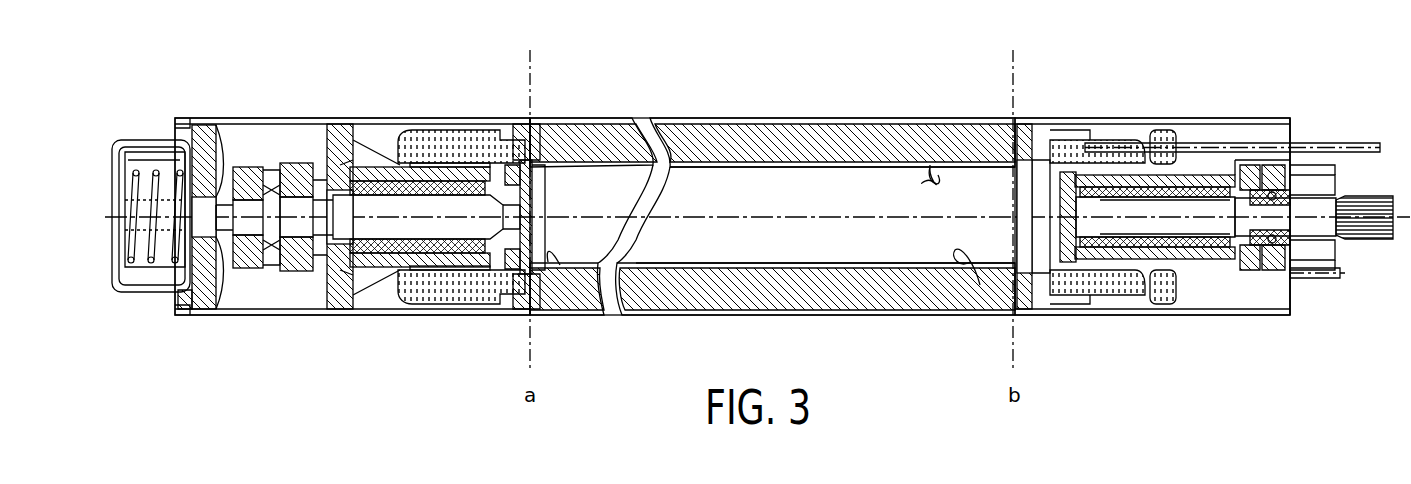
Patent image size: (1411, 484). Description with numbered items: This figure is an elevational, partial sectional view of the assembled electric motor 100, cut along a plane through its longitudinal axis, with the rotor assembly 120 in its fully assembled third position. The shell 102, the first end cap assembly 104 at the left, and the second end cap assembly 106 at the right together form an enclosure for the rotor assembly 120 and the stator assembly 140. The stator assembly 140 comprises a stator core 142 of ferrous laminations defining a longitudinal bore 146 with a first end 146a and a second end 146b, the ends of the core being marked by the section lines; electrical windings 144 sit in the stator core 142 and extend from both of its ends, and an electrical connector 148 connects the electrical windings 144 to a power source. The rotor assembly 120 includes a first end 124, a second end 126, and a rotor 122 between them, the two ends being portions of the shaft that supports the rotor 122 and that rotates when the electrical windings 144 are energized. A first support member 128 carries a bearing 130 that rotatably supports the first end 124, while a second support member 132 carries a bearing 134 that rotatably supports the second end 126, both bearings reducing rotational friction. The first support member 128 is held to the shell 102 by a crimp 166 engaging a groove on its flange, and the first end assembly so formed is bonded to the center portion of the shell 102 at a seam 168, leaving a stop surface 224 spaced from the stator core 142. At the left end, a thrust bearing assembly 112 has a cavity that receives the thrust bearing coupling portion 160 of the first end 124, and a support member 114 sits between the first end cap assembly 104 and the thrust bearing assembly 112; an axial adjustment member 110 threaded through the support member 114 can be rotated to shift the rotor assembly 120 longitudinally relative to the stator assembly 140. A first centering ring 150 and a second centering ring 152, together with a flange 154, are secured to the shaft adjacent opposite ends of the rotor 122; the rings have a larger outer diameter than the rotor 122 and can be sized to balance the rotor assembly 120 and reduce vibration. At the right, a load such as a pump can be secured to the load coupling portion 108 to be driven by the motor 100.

The electric motor 100 is at (660, 88).
The shell 102 is at (879, 113).
The first end cap assembly 104 is at (152, 138).
The second end cap assembly 106 is at (1346, 95).
The load coupling portion 108 is at (1362, 238).
The axial adjustment member 110 is at (252, 262).
The thrust bearing assembly 112 is at (273, 150).
The support member 114 is at (232, 300).
The rotor assembly 120 is at (753, 156).
The rotor 122 is at (833, 187).
The first end 124 is at (355, 228).
The second end 126 is at (1200, 272).
The first support member 128 is at (395, 255).
The bearing 130 is at (450, 268).
The second support member 132 is at (1112, 258).
The bearing 134 is at (1175, 236).
The stator assembly 140 is at (555, 150).
The stator core 142 is at (600, 117).
The electrical windings 144 is at (445, 128).
The longitudinal bore 146 is at (930, 165).
The first end 146a is at (560, 265).
The second end 146b is at (980, 285).
The electrical connector 148 is at (1366, 142).
The first centering ring 150 is at (522, 282).
The second centering ring 152 is at (1035, 268).
The flange 154 is at (1085, 265).
The thrust bearing coupling portion 160 is at (342, 288).
The crimp 166 is at (343, 120).
The seam 168 is at (507, 117).
The stop surface 224 is at (1077, 175).